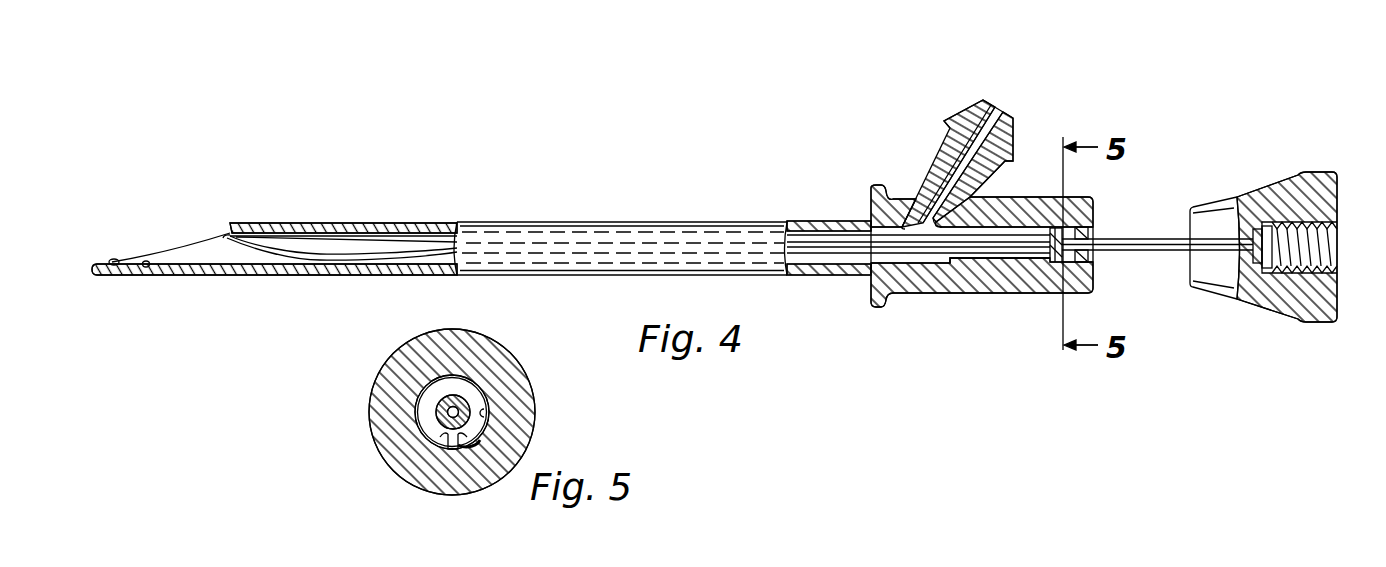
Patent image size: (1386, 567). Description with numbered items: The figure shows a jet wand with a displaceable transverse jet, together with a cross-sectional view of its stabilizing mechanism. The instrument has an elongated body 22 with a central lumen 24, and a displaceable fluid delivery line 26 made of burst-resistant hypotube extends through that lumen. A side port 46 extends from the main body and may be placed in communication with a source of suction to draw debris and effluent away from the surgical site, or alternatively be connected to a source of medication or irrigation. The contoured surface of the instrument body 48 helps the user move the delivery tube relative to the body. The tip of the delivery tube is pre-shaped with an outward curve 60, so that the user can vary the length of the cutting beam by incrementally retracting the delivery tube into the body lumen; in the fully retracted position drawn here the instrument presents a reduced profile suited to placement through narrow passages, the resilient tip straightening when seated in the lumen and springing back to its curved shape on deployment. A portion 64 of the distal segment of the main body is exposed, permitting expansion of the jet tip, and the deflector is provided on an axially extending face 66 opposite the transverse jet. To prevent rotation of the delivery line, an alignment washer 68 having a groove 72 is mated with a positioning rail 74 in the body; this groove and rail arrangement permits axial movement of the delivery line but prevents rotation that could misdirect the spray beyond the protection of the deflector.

In FIG. 4, the elongated body 22 is at (595, 278).
In FIG. 5, the central lumen 24 is at (490, 415).
In FIG. 4, the fluid delivery line 26 is at (928, 255).
In FIG. 5, the fluid delivery line 26 is at (437, 410).
In FIG. 4, the side port 46 is at (1014, 121).
In FIG. 4, the instrument body 48 is at (981, 294).
In FIG. 5, the instrument body 48 is at (370, 387).
In FIG. 4, the outward curve 60 is at (428, 221).
In FIG. 4, the exposed portion of distal segment 64 is at (185, 248).
In FIG. 4, the axial extending face 66 is at (146, 268).
In FIG. 4, the alignment washer 68 is at (1060, 260).
In FIG. 5, the alignment washer 68 is at (484, 398).
In FIG. 5, the groove 72 is at (438, 437).
In FIG. 4, the positioning rail 74 is at (1008, 261).
In FIG. 5, the positioning rail 74 is at (470, 440).